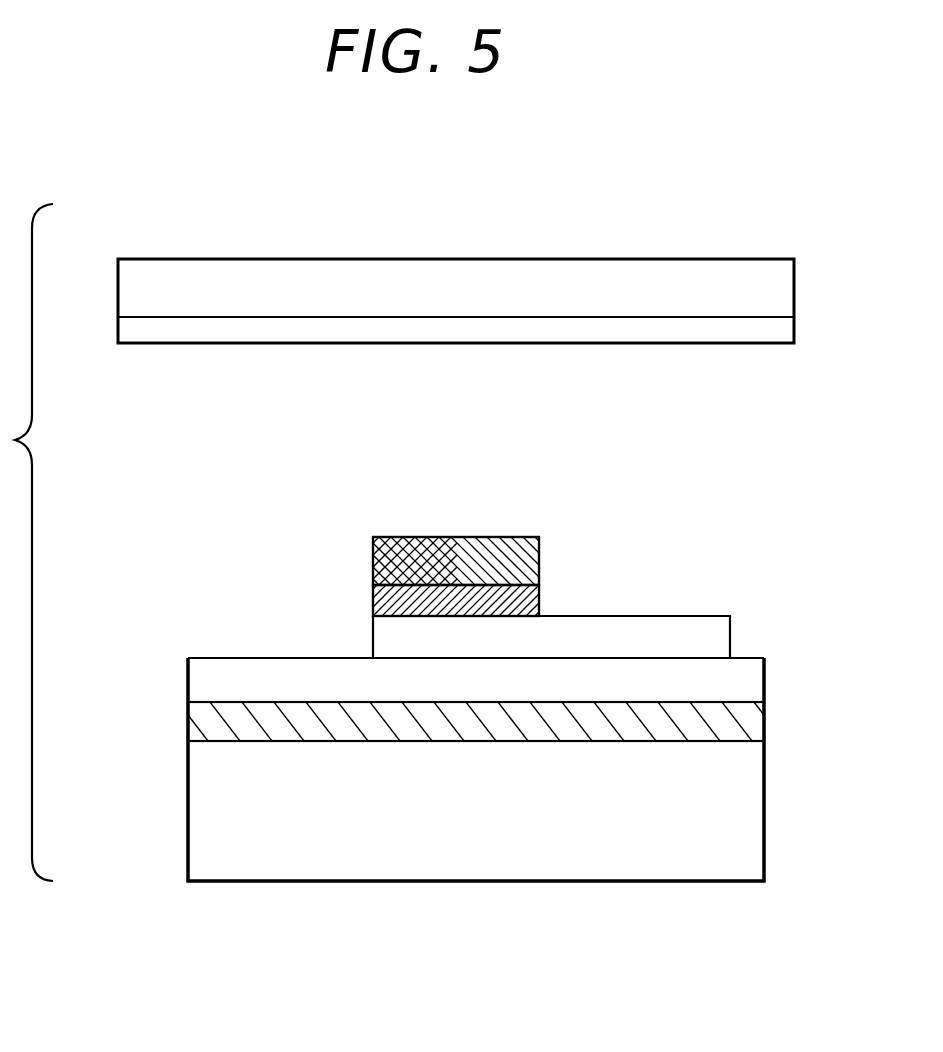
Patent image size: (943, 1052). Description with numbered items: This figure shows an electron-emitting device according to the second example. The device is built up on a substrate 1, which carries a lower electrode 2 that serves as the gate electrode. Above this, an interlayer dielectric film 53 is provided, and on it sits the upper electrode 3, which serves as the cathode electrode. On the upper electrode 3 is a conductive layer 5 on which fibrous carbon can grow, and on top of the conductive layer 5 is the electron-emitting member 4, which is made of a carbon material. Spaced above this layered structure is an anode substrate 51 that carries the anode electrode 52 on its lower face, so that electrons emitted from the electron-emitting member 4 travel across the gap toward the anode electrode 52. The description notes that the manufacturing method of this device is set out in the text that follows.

The substrate 1 is at (745, 775).
The lower electrode (gate electrode) 2 is at (745, 719).
The upper electrode (cathode electrode) 3 is at (697, 623).
The electron-emitting member 4 is at (492, 545).
The conductive layer 5 is at (533, 593).
The anode substrate 51 is at (213, 268).
The anode electrode 52 is at (198, 332).
The interlayer dielectric film 53 is at (745, 680).